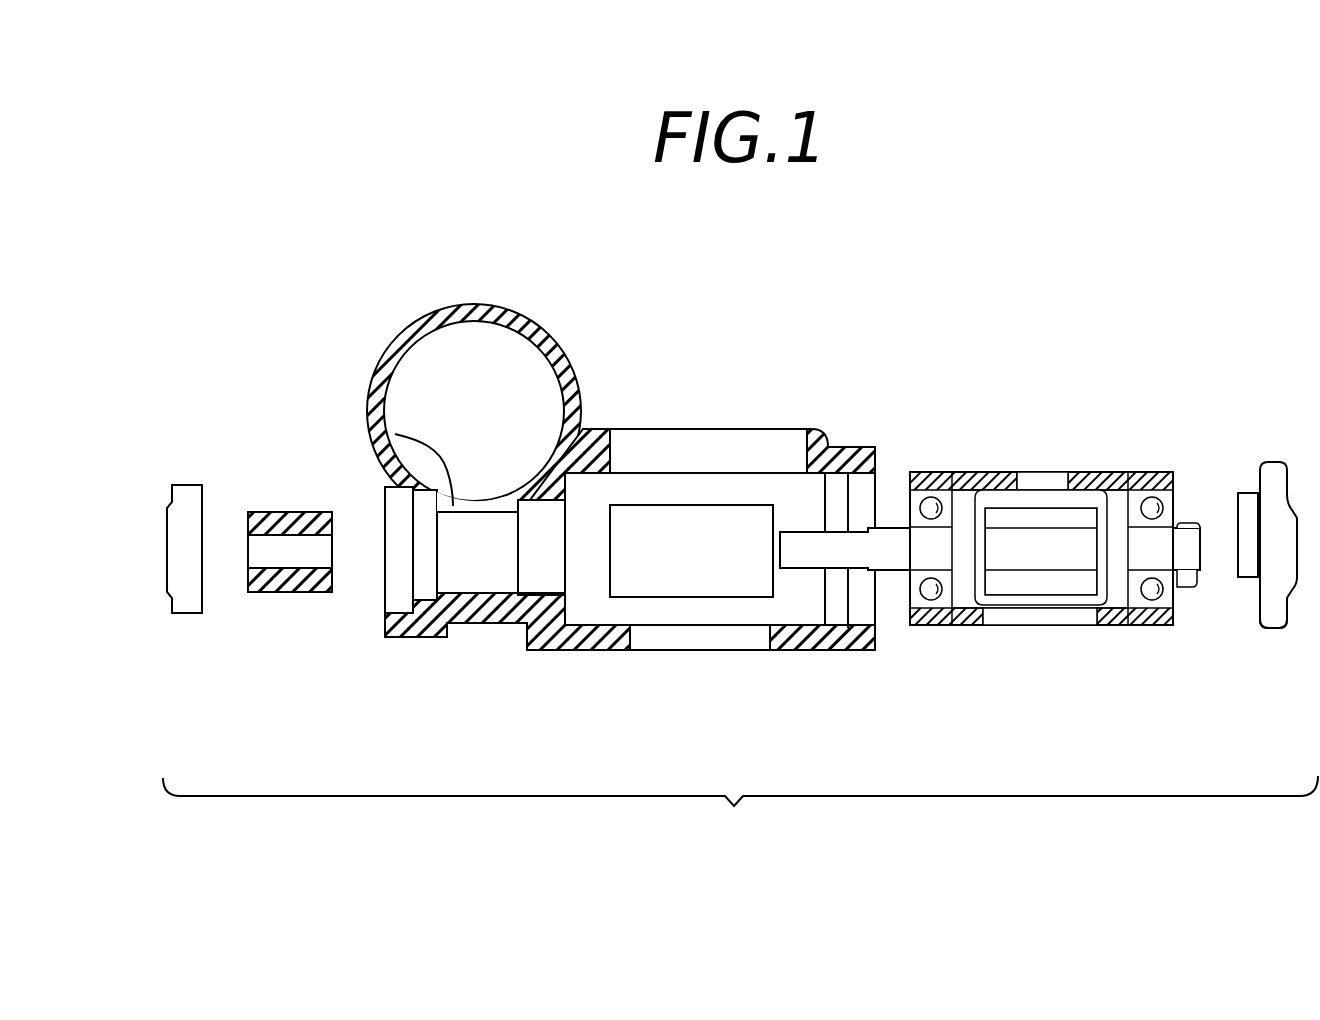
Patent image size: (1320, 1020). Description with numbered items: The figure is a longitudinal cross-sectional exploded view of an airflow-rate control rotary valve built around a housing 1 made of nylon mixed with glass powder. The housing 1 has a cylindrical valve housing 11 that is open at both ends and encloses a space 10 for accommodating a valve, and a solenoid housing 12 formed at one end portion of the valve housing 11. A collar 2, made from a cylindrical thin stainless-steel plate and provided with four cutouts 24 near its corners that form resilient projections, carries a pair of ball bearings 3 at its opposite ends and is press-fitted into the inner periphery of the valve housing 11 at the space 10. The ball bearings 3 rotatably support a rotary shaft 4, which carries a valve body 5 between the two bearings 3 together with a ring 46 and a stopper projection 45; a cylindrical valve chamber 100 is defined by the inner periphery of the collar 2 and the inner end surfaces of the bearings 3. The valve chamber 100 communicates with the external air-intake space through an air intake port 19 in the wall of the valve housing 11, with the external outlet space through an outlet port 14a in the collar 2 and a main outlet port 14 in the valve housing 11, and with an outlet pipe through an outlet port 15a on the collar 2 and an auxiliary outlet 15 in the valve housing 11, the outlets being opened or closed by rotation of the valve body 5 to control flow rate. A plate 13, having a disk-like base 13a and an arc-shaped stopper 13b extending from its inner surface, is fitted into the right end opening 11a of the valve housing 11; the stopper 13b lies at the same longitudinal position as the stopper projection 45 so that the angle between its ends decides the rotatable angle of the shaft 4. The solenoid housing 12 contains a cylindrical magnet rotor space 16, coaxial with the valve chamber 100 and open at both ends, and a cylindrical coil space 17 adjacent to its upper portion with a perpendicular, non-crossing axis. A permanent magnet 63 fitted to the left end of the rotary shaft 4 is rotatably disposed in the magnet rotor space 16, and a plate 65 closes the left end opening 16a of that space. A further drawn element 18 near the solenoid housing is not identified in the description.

The housing 1 is at (589, 664).
The collar 2 is at (1136, 470).
The ball bearings 3 is at (915, 612).
The rotary shaft 4 is at (888, 543).
The valve body 5 is at (1058, 493).
The space 10 is at (603, 490).
The valve housing 11 is at (856, 457).
The right side opening 11a is at (868, 592).
The solenoid housing 12 is at (492, 312).
The plate 13 is at (1273, 475).
The disk-like base 13a is at (1273, 634).
The arc-shaped stopper 13b is at (1247, 507).
The main outlet port 14 is at (692, 642).
The outlet port 14a is at (1038, 614).
The auxiliary outlet 15 is at (710, 448).
The outlet port 15a is at (1042, 479).
The magnet rotor space 16 is at (472, 567).
The left end opening 16a is at (390, 583).
The coil space 17 is at (413, 376).
The lead 18 is at (395, 434).
The air intake port 19 is at (658, 594).
The cutouts 24 is at (963, 450).
The stopper projection 45 is at (1190, 575).
The ring 46 is at (1190, 525).
The permanent magnet 63 is at (297, 577).
The plate 65 is at (186, 602).
The cylindrical valve chamber 100 is at (1020, 585).